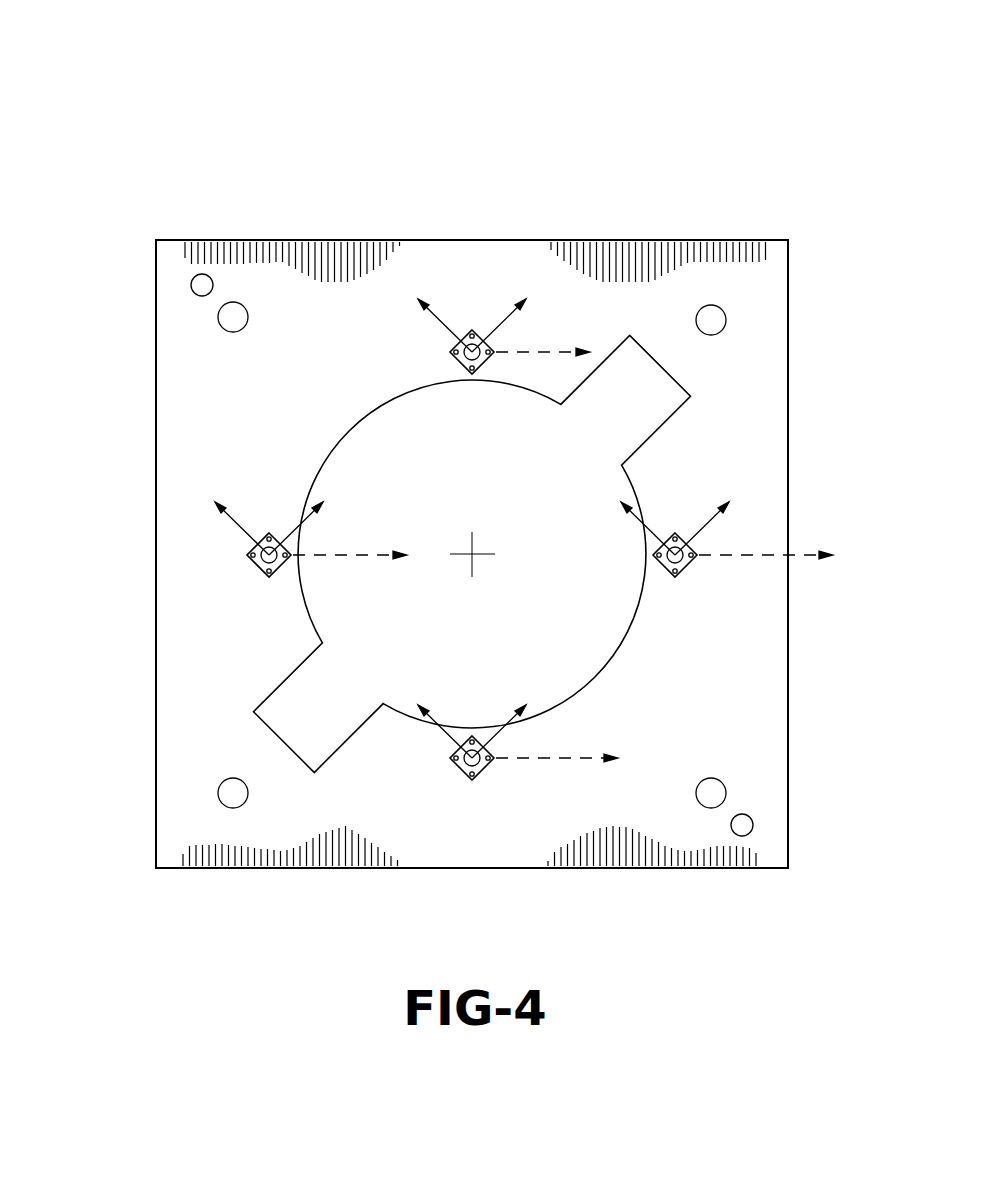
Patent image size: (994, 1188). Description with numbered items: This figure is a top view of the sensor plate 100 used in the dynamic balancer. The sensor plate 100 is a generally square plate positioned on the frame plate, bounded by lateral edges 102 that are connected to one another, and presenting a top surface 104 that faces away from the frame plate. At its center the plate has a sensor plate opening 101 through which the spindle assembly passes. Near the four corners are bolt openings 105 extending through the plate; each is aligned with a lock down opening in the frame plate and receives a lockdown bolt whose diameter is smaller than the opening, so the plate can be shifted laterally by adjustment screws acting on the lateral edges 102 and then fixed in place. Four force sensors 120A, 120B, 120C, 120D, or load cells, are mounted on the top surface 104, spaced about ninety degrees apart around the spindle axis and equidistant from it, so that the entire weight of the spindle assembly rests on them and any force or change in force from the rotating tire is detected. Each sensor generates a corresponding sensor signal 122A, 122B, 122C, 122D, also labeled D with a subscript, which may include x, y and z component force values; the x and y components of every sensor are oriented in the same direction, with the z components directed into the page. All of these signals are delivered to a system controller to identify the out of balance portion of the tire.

The sensor plate 100 is at (328, 146).
The sensor plate opening 101 is at (505, 580).
The lateral edges 102 is at (486, 240).
The top surface 104 is at (223, 657).
The bolt openings 105 is at (220, 322).
The force sensor 120A is at (455, 373).
The force sensor 120B is at (690, 572).
The force sensor 120C is at (460, 772).
The force sensor 120D is at (255, 570).
The sensor signal 122A is at (545, 365).
The sensor signal 122B is at (745, 550).
The sensor signal 122C is at (545, 760).
The sensor signal 122D is at (360, 556).